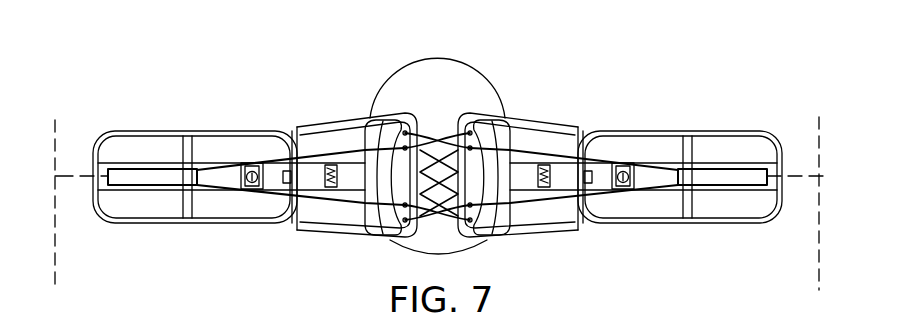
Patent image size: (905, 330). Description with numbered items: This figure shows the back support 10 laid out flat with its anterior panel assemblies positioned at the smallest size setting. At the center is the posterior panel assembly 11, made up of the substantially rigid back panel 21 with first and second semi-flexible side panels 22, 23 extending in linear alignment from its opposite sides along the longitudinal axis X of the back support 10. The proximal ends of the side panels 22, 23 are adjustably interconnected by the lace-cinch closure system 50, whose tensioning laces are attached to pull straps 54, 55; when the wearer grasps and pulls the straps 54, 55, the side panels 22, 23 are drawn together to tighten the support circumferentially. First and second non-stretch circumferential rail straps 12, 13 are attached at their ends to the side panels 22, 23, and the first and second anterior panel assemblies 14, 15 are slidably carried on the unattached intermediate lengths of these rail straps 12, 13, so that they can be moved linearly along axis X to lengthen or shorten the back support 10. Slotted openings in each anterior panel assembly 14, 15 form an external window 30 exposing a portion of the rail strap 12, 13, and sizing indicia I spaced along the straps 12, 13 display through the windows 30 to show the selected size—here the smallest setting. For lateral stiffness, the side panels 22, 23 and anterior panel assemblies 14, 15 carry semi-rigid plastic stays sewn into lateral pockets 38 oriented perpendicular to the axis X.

The back support 10 is at (527, 78).
The posterior panel assembly 11 is at (366, 96).
The first circumferential rail strap 12 is at (560, 183).
The second circumferential rail strap 13 is at (313, 183).
The first anterior panel assembly 14 is at (742, 142).
The second anterior panel assembly 15 is at (147, 148).
The back panel 21 is at (447, 88).
The first side panel 22 is at (547, 130).
The second side panel 23 is at (333, 130).
The external window 30 is at (249, 156).
The lateral pocket 38 is at (183, 150).
The lace-cinch closure system 50 is at (455, 255).
The pull strap 54 is at (130, 182).
The pull strap 55 is at (722, 180).
The longitudinal axis x is at (70, 176).
The sizing indicia I is at (253, 188).